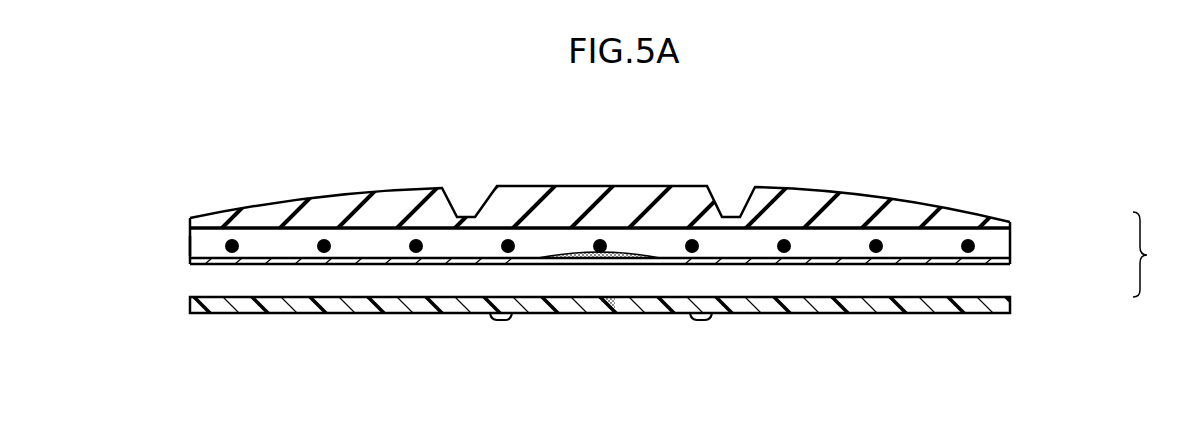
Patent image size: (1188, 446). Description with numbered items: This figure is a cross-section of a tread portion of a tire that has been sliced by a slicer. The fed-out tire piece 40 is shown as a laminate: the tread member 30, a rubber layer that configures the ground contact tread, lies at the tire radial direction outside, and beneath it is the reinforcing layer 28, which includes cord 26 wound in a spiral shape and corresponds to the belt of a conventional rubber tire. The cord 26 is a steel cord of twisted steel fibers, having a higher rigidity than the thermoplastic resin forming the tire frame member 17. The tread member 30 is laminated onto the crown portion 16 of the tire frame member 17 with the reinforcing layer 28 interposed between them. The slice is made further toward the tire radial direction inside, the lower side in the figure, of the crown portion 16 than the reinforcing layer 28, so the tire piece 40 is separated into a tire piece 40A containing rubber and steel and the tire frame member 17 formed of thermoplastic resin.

The tread member 30 is at (637, 200).
The cord 26 is at (967, 240).
The reinforcing layer 28 is at (190, 245).
The tire piece 40A is at (1012, 236).
The tire frame member 17 is at (1012, 263).
The crown portion 16 is at (973, 305).
The tire piece 40 is at (1158, 254).